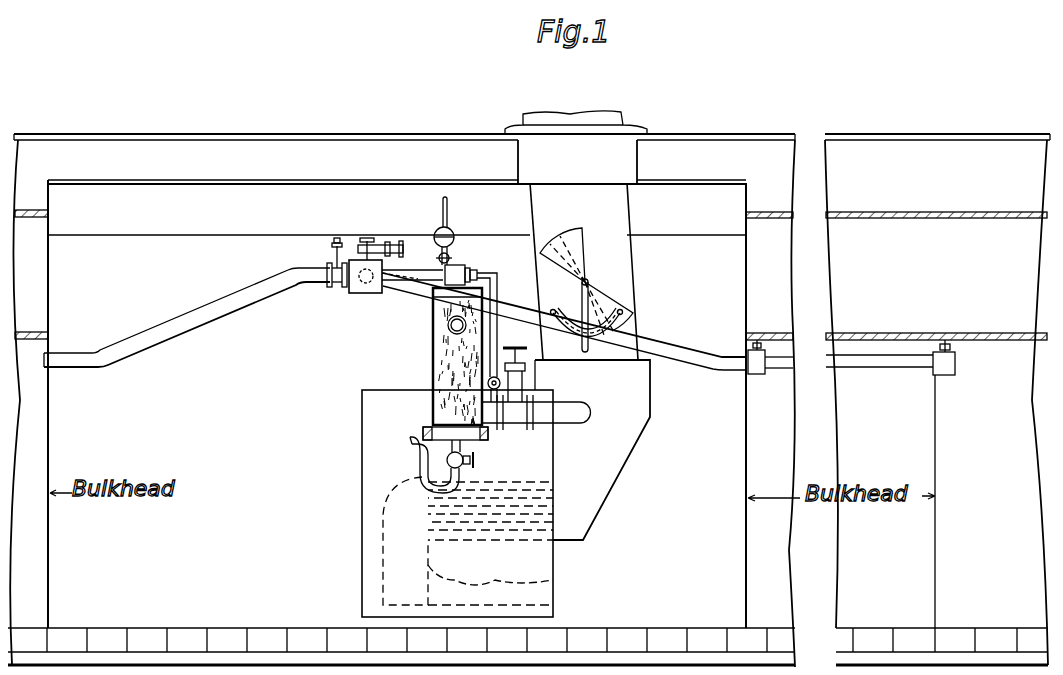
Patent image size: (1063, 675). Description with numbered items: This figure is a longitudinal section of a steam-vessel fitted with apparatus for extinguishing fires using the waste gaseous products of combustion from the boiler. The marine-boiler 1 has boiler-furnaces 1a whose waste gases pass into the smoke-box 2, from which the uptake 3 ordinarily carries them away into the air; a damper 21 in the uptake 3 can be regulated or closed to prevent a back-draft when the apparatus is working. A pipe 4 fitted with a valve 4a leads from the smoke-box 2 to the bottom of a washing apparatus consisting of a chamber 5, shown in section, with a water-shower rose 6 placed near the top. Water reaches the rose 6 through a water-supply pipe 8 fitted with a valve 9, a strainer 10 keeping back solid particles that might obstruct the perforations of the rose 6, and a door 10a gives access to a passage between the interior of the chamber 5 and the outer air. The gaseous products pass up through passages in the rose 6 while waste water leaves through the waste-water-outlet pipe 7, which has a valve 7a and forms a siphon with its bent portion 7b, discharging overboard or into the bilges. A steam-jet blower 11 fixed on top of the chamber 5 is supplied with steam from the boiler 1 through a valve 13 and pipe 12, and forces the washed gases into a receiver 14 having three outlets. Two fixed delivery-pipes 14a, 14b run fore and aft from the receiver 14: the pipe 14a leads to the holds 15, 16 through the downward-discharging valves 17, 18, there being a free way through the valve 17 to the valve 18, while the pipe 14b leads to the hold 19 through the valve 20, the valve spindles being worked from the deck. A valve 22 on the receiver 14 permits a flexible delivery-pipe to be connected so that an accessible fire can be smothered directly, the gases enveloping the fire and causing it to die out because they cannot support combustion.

The marine-boiler 1 is at (460, 536).
The boiler-furnaces 1a is at (485, 578).
The smoke-box 2 is at (592, 450).
The uptake 3 is at (584, 271).
The pipe 4 is at (536, 412).
The valve 4a is at (513, 427).
The chamber 5 is at (455, 370).
The water-shower rose 6 is at (437, 298).
The waste-water-outlet pipe 7 is at (405, 541).
The valve 7a is at (462, 468).
The bent pipe 7b is at (426, 480).
The water-supply pipe 8 is at (448, 214).
The valve 9 is at (450, 258).
The strainer 10 is at (455, 236).
The door 10a is at (438, 334).
The steam-jet blower 11 is at (412, 270).
The pipe 12 is at (498, 334).
The valve 13 is at (488, 384).
The receiver 14 is at (368, 294).
The fixed delivery-pipe 14a is at (697, 350).
The fixed delivery-pipe 14b is at (192, 326).
The hold 15 is at (824, 457).
The hold 16 is at (974, 473).
The valve 17 is at (757, 375).
The valve 18 is at (949, 376).
The hold 19 is at (30, 465).
The valve 20 is at (337, 288).
The damper 21 is at (588, 281).
The valve 22 is at (372, 240).